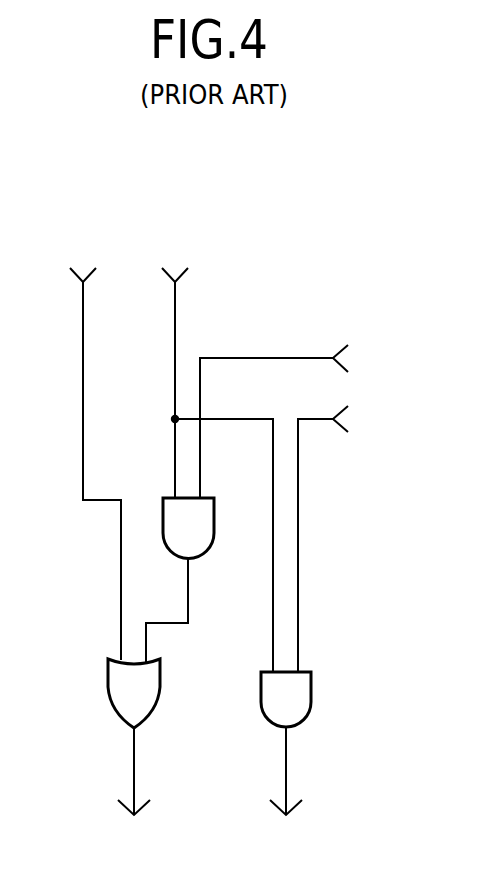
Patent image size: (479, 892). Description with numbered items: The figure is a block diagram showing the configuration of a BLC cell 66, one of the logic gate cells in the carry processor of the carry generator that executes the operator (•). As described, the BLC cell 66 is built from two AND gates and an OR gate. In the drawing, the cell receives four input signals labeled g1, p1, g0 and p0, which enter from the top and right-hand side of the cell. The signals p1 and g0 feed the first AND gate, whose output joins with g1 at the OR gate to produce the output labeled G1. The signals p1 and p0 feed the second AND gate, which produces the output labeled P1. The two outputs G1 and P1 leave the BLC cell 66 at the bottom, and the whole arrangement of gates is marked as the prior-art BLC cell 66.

The BLC cell 66 is at (250, 277).
The generate input signal g1 is at (95, 448).
The propagate input signal p1 is at (175, 367).
The generate input signal g0 is at (290, 417).
The propagate input signal p0 is at (277, 537).
The group generate output G1 is at (135, 793).
The group propagate output P1 is at (286, 792).